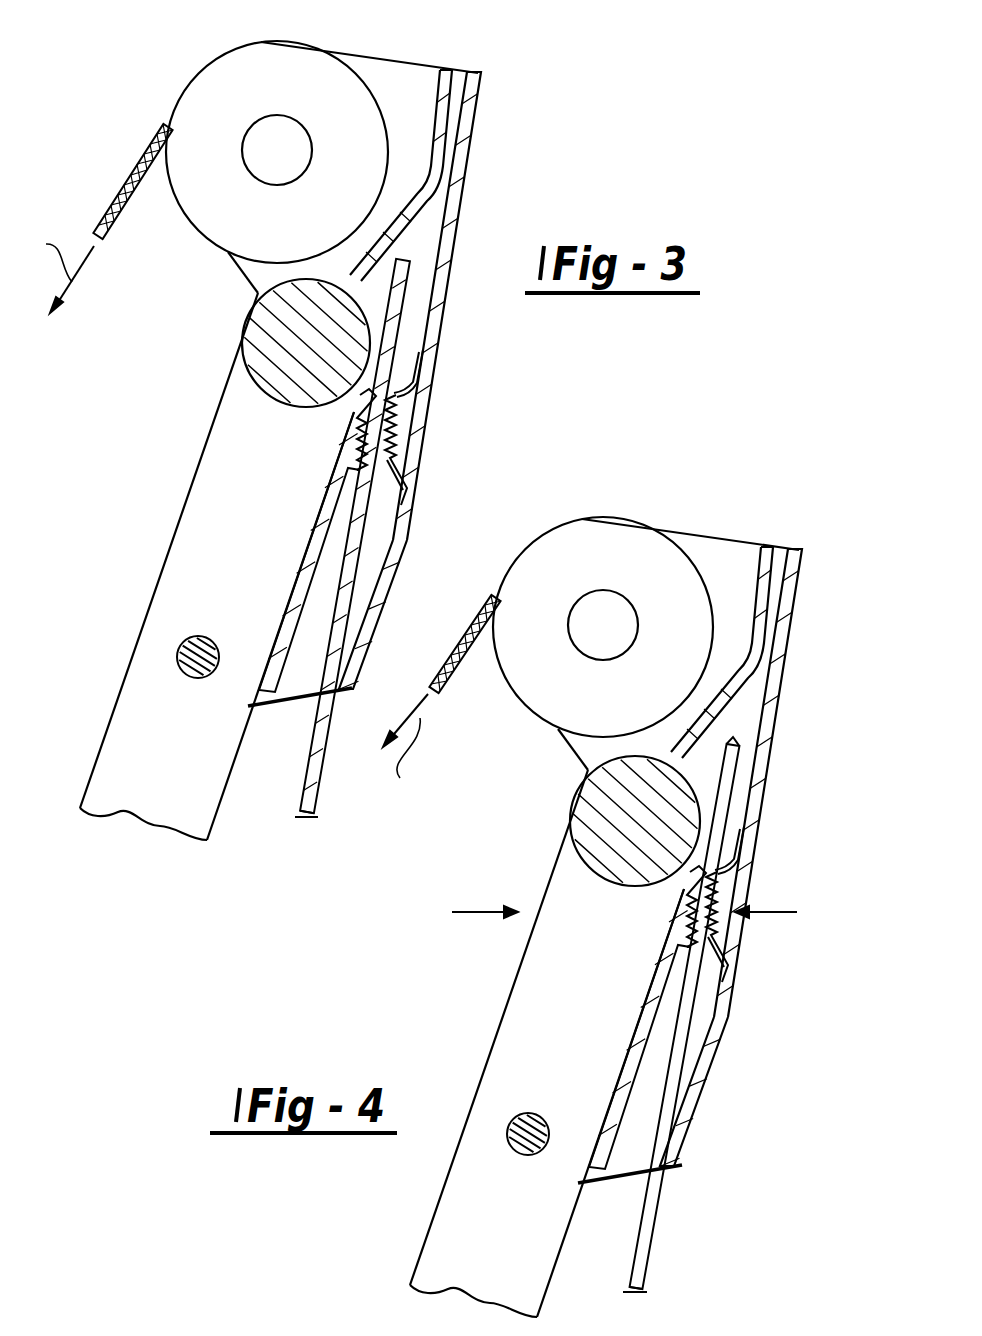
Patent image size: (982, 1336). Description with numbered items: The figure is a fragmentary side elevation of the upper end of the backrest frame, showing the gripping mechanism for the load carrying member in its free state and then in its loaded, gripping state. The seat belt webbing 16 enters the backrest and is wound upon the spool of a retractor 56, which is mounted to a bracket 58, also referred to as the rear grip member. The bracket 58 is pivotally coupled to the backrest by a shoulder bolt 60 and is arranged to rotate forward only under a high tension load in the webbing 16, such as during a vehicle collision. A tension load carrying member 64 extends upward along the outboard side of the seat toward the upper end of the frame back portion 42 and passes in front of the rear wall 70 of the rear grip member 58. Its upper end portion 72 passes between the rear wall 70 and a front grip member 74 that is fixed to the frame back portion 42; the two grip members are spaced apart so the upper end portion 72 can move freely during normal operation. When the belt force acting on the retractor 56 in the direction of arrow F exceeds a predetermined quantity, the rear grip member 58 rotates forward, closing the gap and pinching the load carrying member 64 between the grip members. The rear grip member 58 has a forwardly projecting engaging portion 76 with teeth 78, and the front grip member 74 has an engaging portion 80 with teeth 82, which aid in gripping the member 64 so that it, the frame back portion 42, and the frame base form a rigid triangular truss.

In FIG. 3, the seat belt webbing 16 is at (148, 158).
In FIG. 4, the seat belt webbing 16 is at (458, 660).
In FIG. 3, the frame back portion 42 is at (180, 506).
In FIG. 4, the frame back portion 42 is at (522, 959).
In FIG. 3, the retractor 56 is at (262, 38).
In FIG. 4, the retractor 56 is at (585, 518).
In FIG. 3, the bracket 58 is at (462, 201).
In FIG. 4, the bracket 58 is at (788, 682).
In FIG. 3, the shoulder bolt 60 is at (200, 636).
In FIG. 4, the shoulder bolt 60 is at (532, 1113).
In FIG. 3, the tension load carrying member 64 is at (318, 780).
In FIG. 4, the tension load carrying member 64 is at (647, 1260).
In FIG. 3, the rear wall 70 is at (411, 534).
In FIG. 4, the rear wall 70 is at (694, 1091).
In FIG. 3, the upper end portion 72 is at (410, 306).
In FIG. 4, the upper end portion 72 is at (738, 787).
In FIG. 3, the front grip member 74 is at (318, 519).
In FIG. 4, the front grip member 74 is at (623, 1047).
In FIG. 3, the engaging portion 76 is at (396, 440).
In FIG. 4, the engaging portion 76 is at (722, 900).
In FIG. 3, the teeth 78 is at (389, 422).
In FIG. 3, the engaging portion 80 is at (358, 458).
In FIG. 4, the engaging portion 80 is at (690, 906).
In FIG. 3, the teeth 82 is at (368, 419).
In FIG. 4, the teeth 82 is at (635, 821).